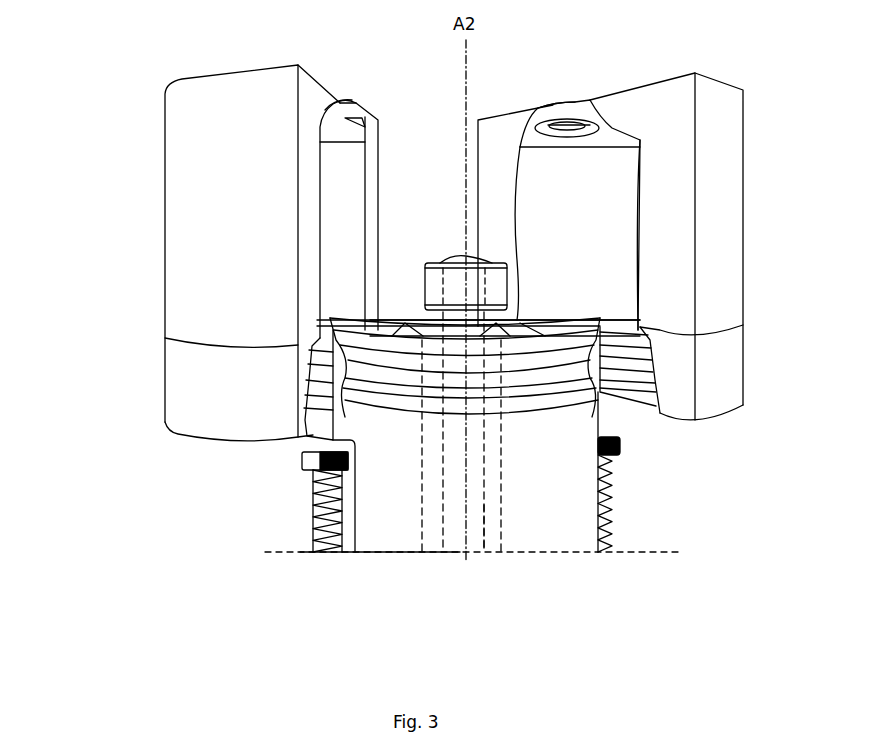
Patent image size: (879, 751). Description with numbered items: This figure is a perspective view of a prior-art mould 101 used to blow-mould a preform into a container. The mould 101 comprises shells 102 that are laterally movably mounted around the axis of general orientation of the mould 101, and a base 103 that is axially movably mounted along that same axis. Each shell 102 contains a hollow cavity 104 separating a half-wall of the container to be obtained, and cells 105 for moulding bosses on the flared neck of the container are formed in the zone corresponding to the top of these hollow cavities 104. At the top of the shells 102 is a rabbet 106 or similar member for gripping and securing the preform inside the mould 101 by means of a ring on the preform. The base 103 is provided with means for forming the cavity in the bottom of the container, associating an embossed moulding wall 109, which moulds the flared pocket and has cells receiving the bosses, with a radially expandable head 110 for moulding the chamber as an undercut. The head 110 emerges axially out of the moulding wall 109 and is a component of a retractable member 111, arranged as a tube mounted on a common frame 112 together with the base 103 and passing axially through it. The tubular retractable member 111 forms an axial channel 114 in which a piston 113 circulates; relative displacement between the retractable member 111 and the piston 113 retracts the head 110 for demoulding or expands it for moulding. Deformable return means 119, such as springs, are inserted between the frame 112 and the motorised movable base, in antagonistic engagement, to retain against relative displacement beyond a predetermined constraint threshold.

The mould 101 is at (150, 197).
The shells 102 is at (252, 253).
The base 103 is at (335, 364).
The hollow cavity 104 is at (336, 169).
The cells 105 is at (366, 120).
The rabbet 106 is at (346, 101).
The moulding wall 109 is at (394, 320).
The radially expandable head 110 is at (444, 260).
The retractable member 111 is at (500, 478).
The frame 112 is at (472, 472).
The piston 113 is at (485, 509).
The axial channel 114 is at (456, 538).
The deformable return means 119 is at (313, 512).